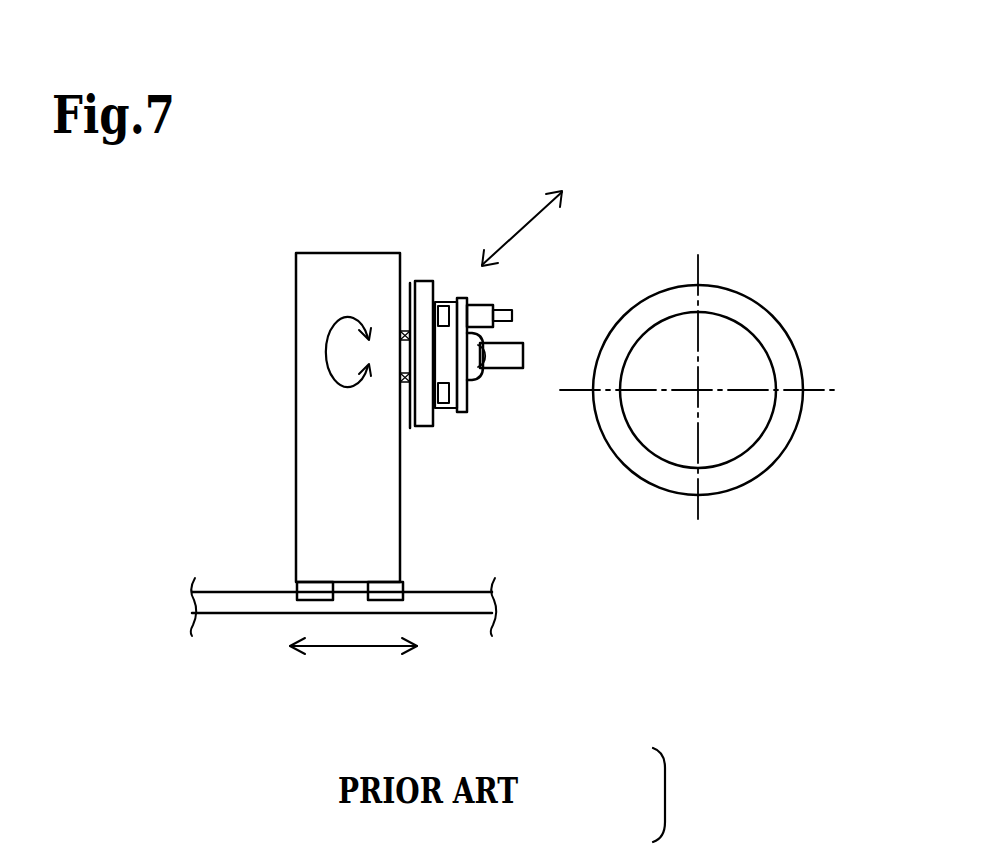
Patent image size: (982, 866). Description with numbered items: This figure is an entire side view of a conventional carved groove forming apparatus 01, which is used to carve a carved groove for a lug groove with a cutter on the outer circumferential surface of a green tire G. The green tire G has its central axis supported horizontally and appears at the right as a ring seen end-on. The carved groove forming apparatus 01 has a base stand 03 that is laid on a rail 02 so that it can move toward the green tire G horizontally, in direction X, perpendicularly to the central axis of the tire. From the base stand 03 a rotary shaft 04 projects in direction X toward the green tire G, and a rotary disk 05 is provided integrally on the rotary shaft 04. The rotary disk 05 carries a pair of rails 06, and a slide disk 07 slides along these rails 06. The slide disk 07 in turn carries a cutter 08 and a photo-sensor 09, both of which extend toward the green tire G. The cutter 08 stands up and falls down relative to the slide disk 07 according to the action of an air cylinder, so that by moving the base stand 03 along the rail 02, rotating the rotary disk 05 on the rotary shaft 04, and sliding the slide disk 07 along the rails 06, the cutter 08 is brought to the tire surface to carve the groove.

The carved groove forming apparatus 01 is at (498, 96).
The rail 02 is at (447, 591).
The base stand 03 is at (296, 492).
The rotary shaft 04 is at (404, 322).
The rotary disk 05 is at (430, 281).
The rails 06 is at (441, 310).
The slide disk 07 is at (466, 394).
The cutter 08 is at (523, 358).
The photo-sensor 09 is at (507, 311).
The green tire G is at (777, 333).